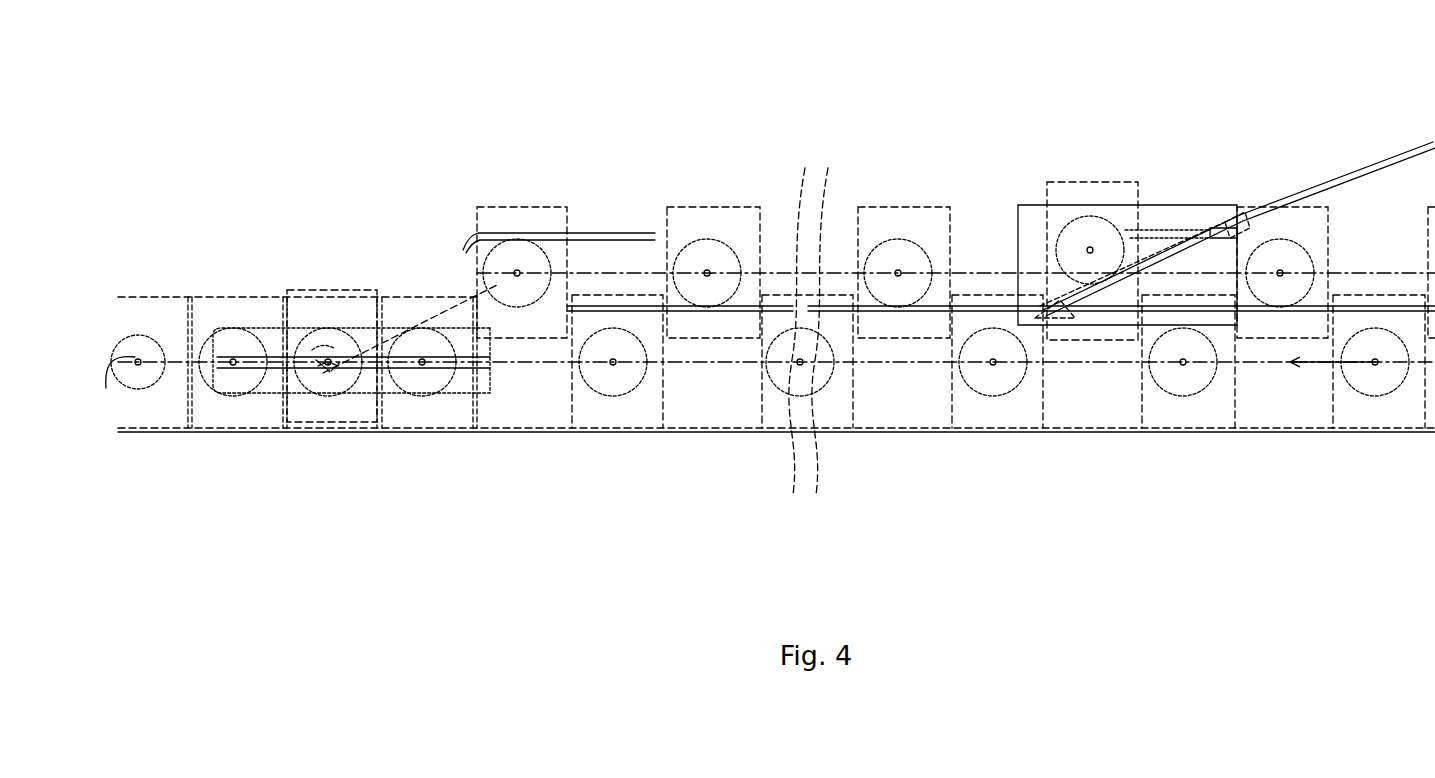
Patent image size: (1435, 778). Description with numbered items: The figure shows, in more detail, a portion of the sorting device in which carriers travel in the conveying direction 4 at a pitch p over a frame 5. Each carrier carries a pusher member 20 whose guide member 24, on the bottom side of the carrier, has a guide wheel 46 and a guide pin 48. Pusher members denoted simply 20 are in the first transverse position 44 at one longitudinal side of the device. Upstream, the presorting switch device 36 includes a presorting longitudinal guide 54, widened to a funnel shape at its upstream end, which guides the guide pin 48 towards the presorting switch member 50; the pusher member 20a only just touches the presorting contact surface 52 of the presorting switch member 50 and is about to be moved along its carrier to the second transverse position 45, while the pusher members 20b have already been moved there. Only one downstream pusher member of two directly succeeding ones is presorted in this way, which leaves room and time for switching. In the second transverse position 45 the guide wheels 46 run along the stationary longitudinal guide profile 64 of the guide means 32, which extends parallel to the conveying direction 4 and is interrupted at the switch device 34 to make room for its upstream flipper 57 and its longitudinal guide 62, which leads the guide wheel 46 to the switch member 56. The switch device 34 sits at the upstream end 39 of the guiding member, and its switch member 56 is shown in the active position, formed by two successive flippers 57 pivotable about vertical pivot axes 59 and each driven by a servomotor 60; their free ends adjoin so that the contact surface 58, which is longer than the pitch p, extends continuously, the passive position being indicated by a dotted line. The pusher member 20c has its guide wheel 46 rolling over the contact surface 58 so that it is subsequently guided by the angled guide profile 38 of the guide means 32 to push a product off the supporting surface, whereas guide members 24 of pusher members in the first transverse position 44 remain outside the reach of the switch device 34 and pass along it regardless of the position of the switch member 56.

The conveying direction 4 is at (775, 91).
The frame 5 is at (525, 438).
The pusher member 20 is at (148, 308).
The pusher member 20a is at (372, 440).
The pusher member 20b is at (535, 183).
The pusher member 20c is at (1110, 158).
The guide member 24 is at (158, 405).
The guide means 32 is at (1368, 117).
The switch device 34 is at (1180, 110).
The presorting switch device 36 is at (410, 248).
The guide profile 38 is at (1365, 172).
The upstream end 39 is at (1237, 190).
The first transverse position 44 is at (900, 365).
The second transverse position 45 is at (604, 270).
The guide wheel 46 is at (1086, 228).
The guide pin 48 is at (312, 258).
The presorting switch member 50 is at (323, 380).
The presorting contact surface 52 is at (333, 355).
The presorting longitudinal guide 54 is at (248, 357).
The switch member 56 is at (1133, 252).
The flipper 57 is at (1172, 248).
The contact surface 58 is at (1070, 275).
The pivot axis 59 is at (1245, 228).
The servomotor 60 is at (1210, 232).
The longitudinal guide 62 is at (1022, 303).
The longitudinal guide profile 64 is at (680, 315).
The pitch p is at (1332, 389).